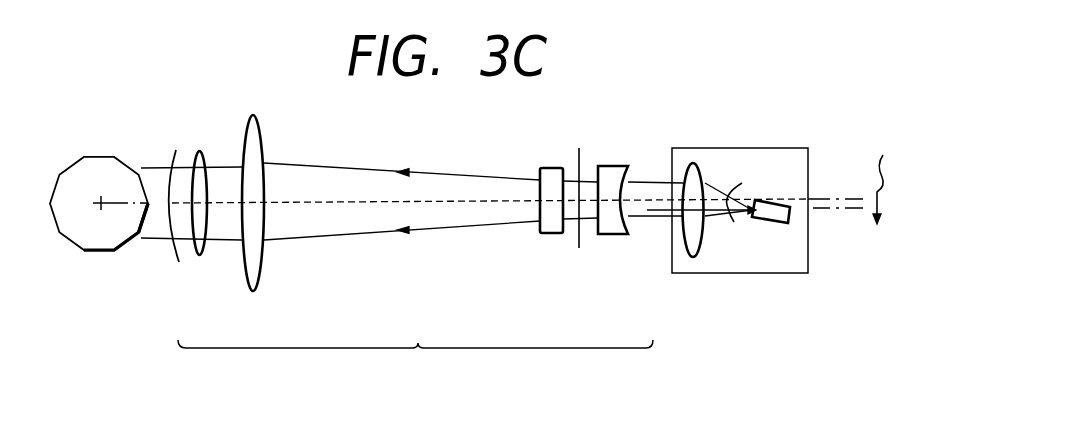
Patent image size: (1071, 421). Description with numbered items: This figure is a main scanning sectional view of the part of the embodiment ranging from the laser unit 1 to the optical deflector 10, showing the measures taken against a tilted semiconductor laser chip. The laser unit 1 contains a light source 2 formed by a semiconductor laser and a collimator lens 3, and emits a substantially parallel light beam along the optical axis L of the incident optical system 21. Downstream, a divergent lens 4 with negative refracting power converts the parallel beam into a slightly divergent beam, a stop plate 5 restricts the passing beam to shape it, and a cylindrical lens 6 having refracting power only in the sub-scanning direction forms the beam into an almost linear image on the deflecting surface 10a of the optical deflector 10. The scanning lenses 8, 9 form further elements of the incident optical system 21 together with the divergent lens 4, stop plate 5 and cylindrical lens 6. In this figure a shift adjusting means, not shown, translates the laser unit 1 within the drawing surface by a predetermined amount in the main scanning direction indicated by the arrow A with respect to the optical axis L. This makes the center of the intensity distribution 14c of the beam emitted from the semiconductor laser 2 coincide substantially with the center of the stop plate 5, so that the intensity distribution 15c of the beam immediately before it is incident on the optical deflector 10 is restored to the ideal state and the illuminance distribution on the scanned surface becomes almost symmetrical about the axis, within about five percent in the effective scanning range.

The laser unit 1 is at (730, 273).
The light source 2 is at (780, 200).
The collimator lens 3 is at (692, 164).
The divergent lens 4 is at (613, 227).
The stop plate 5 is at (579, 248).
The cylindrical lens 6 is at (551, 228).
The scanning lens 8 is at (199, 257).
The scanning lens 9 is at (255, 292).
The optical deflector 10 is at (89, 247).
The deflecting surface 10a is at (152, 213).
The intensity distribution 14c is at (731, 182).
The intensity distribution 15c is at (177, 146).
The incident optical system 21 is at (415, 363).
The optical axis L is at (365, 200).
The arrow A is at (883, 176).